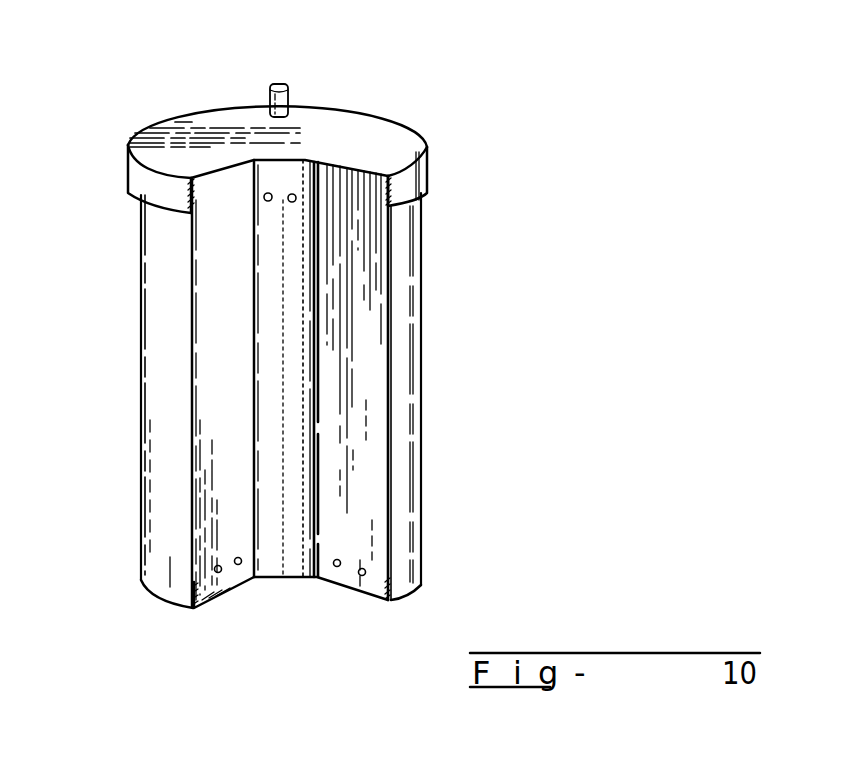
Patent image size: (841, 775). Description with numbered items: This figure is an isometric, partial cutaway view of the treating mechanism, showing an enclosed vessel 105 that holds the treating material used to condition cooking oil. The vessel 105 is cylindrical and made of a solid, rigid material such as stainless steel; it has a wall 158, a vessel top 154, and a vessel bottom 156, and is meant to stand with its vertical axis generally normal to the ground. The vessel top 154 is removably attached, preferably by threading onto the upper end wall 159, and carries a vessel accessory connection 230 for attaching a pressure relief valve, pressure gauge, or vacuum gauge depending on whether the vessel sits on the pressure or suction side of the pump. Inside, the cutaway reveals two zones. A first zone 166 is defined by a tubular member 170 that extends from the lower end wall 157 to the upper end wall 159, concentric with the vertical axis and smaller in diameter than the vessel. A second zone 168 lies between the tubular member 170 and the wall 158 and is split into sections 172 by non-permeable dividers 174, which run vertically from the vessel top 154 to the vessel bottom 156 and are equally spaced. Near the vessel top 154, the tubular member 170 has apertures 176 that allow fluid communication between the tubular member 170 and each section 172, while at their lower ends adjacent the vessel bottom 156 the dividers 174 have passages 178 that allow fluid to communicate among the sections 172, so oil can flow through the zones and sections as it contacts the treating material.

The vessel 105 is at (302, 370).
The vessel top 154 is at (182, 132).
The vessel accessory connection 230 is at (284, 83).
The apertures 176 is at (268, 193).
The upper end wall 159 is at (421, 197).
The wall 158 is at (421, 333).
The lower end wall 157 is at (421, 527).
The second zone 168 is at (213, 295).
The sections 172 is at (222, 343).
The vessel bottom 156 is at (157, 592).
The dividers 174 is at (194, 598).
The passages 178 is at (218, 573).
The first zone 166 is at (273, 578).
The tubular member 170 is at (292, 576).